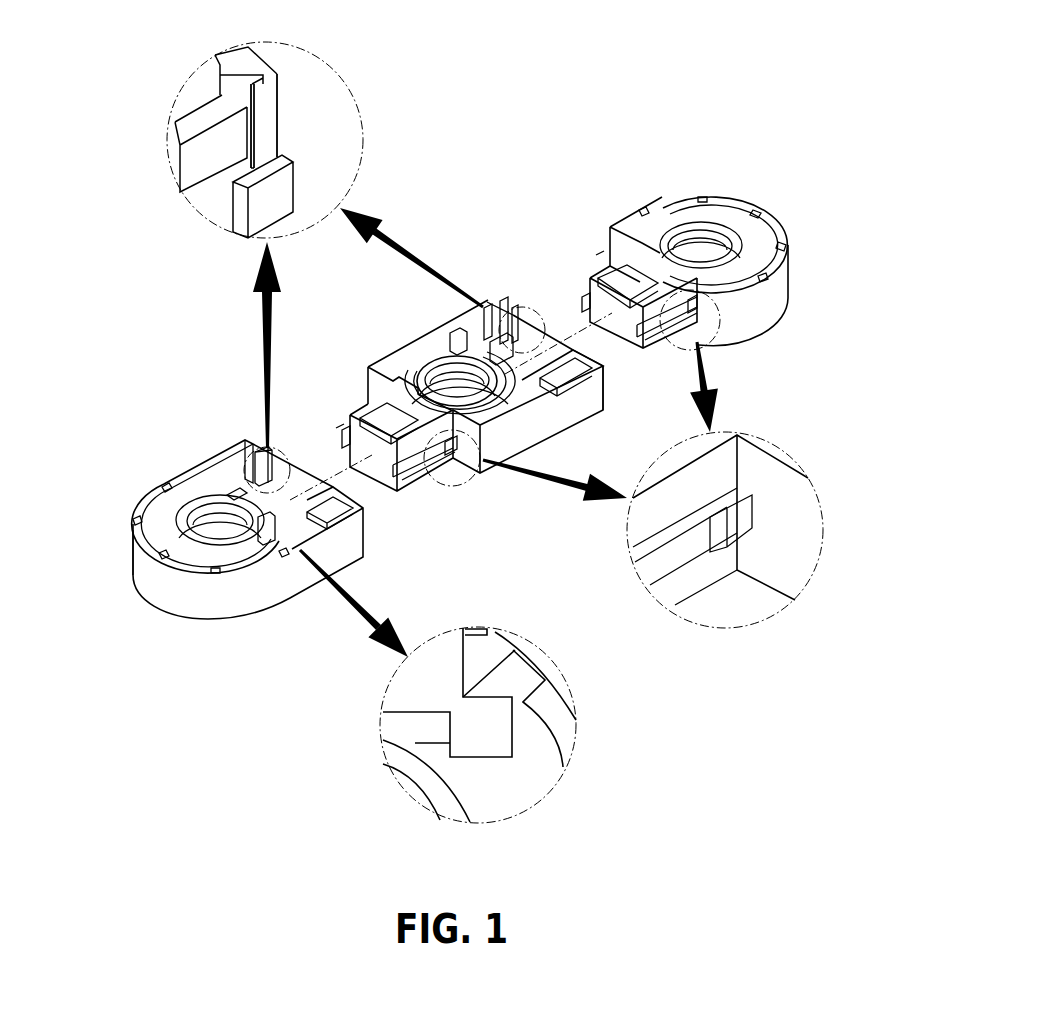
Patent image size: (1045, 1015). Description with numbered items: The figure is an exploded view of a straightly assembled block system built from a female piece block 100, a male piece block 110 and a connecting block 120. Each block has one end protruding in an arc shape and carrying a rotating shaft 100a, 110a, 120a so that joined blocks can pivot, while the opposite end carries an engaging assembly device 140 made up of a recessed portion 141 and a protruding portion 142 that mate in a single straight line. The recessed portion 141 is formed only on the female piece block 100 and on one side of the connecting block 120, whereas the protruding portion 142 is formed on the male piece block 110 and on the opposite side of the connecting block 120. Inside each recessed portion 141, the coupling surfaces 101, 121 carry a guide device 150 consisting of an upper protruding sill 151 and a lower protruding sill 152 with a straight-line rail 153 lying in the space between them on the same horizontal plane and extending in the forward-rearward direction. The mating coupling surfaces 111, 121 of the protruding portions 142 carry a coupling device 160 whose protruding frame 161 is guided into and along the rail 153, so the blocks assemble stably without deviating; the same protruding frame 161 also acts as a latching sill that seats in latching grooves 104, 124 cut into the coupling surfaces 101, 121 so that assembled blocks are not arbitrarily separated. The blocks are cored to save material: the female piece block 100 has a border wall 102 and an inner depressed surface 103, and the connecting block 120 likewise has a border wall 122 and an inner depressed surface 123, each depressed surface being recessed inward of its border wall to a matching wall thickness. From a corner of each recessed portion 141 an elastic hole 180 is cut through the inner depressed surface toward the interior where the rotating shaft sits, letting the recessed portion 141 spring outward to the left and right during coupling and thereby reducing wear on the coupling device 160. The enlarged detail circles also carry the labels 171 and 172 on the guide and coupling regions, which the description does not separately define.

The female piece block 100 is at (195, 655).
The rotating shaft 100a is at (200, 508).
The coupling surface 101 is at (275, 95).
The border wall 102 is at (163, 540).
The inner depressed surface 103 is at (133, 536).
The latching groove 104 is at (394, 114).
The male piece block 110 is at (808, 190).
The rotating shaft 110a is at (693, 230).
The coupling surface 111 is at (723, 465).
The connecting block 120 is at (539, 500).
The rotating shaft 120a is at (430, 377).
The coupling surface 121 is at (365, 83).
The border wall 122 is at (440, 338).
The inner depressed surface 123 is at (490, 425).
The latching groove 124 is at (423, 114).
The engaging assembly device 140 is at (502, 244).
The recessed portion 141 is at (520, 322).
The protruding portion 142 is at (601, 253).
The guide device 150 is at (98, 83).
The protruding sill 151 is at (228, 135).
The protruding sill 152 is at (262, 205).
The rail 153 is at (222, 182).
The coupling device 160 is at (427, 464).
The protruding frame 161 is at (455, 470).
The guide slot 171 is at (252, 125).
The locking protrusion 172 is at (720, 533).
The elastic hole 180 is at (480, 728).